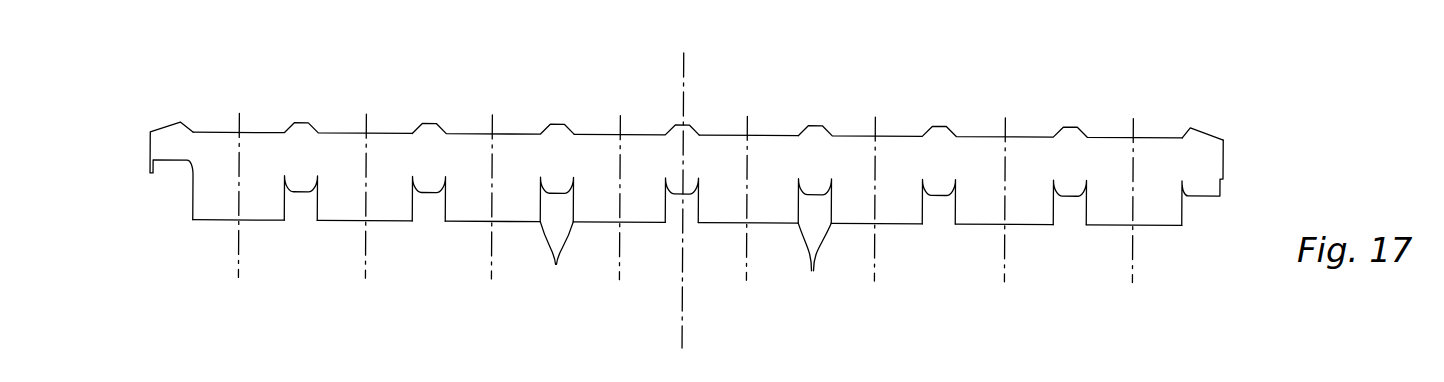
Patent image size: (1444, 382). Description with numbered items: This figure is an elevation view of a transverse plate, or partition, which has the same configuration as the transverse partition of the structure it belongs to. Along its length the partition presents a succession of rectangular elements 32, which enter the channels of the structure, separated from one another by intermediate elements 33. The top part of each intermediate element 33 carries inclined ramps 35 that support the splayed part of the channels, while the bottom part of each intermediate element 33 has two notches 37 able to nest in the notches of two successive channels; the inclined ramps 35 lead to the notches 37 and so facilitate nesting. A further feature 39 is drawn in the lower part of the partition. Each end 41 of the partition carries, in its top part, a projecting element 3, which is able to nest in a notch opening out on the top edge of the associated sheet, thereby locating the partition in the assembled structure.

The projecting element 3 is at (150, 142).
The rectangular element 32 is at (455, 222).
The intermediate element 33 is at (431, 112).
The ramp 35 is at (797, 133).
The notch 37 is at (557, 235).
The funnel shaped lug 39 is at (813, 240).
The end 41 is at (1199, 197).